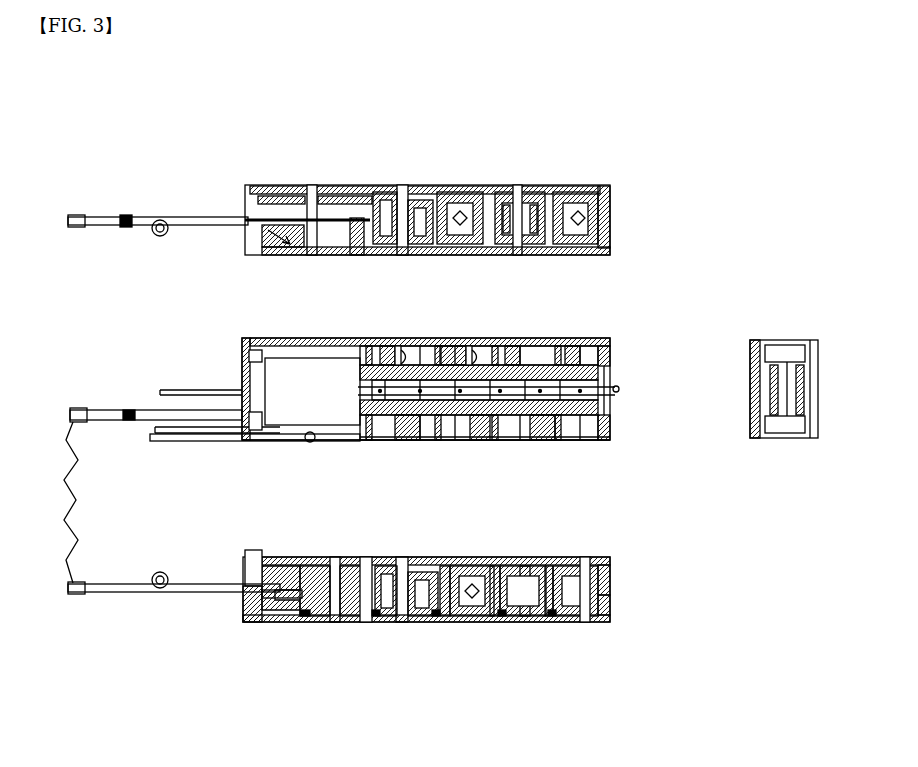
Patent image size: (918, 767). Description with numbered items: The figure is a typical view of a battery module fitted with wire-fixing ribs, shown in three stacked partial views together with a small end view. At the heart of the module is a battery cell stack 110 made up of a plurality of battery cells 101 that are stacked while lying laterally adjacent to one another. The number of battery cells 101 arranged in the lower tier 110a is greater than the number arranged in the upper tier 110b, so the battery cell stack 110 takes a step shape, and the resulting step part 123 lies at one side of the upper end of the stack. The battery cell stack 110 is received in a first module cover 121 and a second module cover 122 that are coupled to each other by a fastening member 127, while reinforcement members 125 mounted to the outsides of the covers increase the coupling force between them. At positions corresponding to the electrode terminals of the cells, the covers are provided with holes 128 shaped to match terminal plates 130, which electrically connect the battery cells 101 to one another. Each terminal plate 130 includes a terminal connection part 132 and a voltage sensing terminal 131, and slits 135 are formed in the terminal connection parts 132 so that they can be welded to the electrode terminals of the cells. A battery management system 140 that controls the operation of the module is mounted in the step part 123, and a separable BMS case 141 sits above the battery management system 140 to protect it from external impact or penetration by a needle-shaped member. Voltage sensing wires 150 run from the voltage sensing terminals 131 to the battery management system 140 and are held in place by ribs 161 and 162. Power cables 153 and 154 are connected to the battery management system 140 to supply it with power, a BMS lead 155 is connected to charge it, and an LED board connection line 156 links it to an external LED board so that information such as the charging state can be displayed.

The battery cell 101 is at (600, 336).
The battery cell stack 110 is at (616, 373).
The lower tier 110a is at (620, 606).
The upper tier 110b is at (620, 576).
The first module cover 121 is at (563, 442).
The second module cover 122 is at (596, 190).
The step part 123 is at (252, 338).
The reinforcement member 125 is at (306, 190).
The fastening member 127 is at (395, 556).
The hole 128 is at (442, 196).
The terminal plate 130 is at (556, 192).
The voltage sensing terminal 131 is at (390, 346).
The terminal connection part 132 is at (374, 622).
The slit 135 is at (356, 196).
The battery management system 140 is at (246, 560).
The BMS case 141 is at (290, 370).
The voltage sensing wire 150 is at (441, 442).
The power cable 153 is at (51, 502).
The power cable 154 is at (612, 405).
The BMS lead 155 is at (178, 388).
The LED board connection line 156 is at (620, 388).
The rib 161 is at (441, 362).
The rib 162 is at (408, 352).